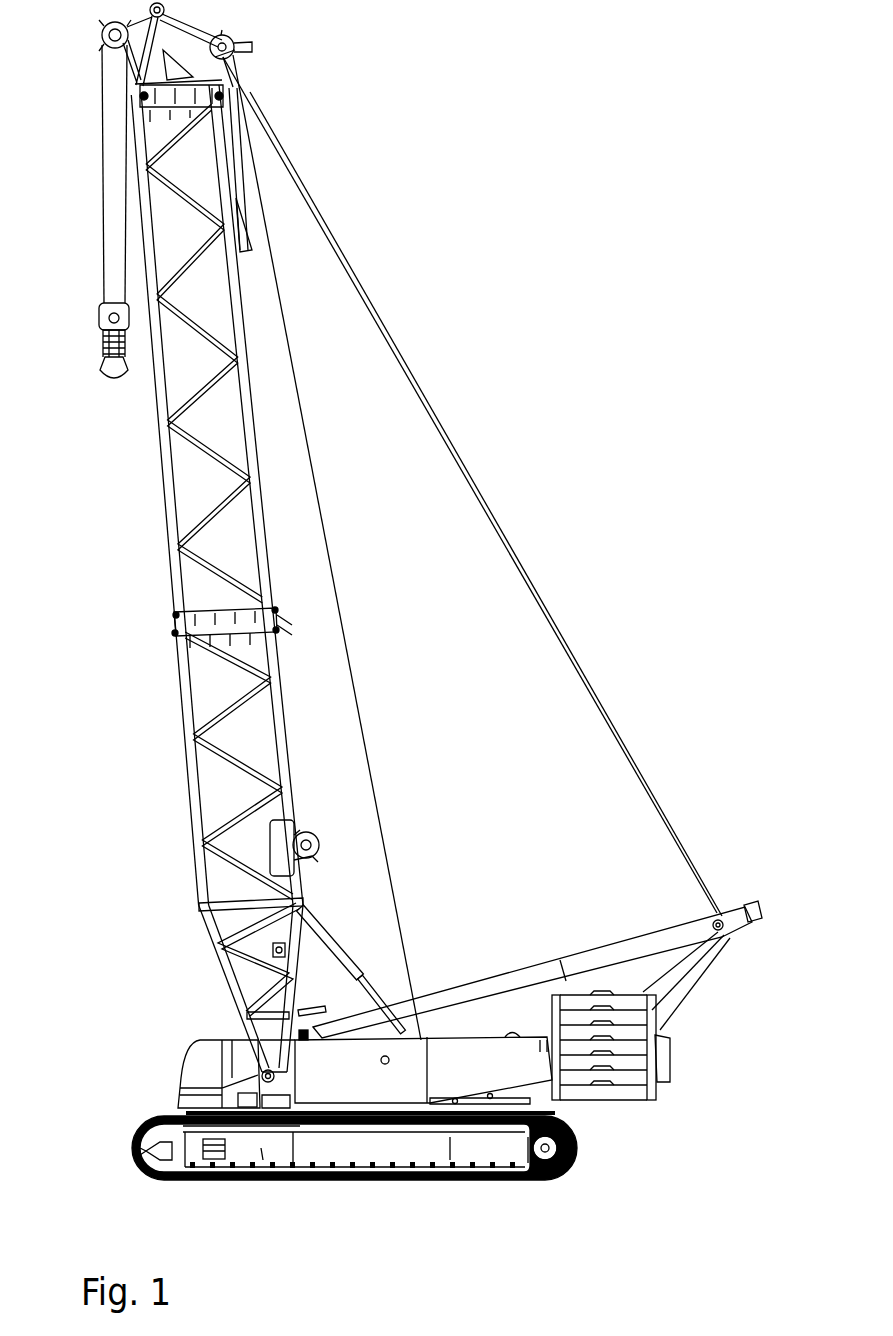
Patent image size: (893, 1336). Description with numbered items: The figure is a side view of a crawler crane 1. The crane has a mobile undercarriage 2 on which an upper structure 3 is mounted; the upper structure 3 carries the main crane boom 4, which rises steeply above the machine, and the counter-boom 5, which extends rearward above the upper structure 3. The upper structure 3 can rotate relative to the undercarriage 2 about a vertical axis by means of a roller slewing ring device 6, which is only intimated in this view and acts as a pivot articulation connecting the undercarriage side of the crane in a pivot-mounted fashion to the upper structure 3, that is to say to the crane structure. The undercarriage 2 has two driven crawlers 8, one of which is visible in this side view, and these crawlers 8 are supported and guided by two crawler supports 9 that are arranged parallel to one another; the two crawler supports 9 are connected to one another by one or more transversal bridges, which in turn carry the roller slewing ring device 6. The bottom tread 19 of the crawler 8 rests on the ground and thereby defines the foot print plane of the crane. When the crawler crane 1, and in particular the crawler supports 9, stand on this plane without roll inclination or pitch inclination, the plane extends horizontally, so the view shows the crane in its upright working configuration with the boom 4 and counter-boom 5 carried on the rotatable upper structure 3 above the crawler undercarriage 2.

The crawler crane 1 is at (469, 197).
The mobile undercarriage 2 is at (222, 1190).
The upper structure 3 is at (364, 1092).
The main crane boom 4 is at (168, 696).
The counter-boom 5 is at (530, 975).
The roller slewing ring device 6 is at (338, 1180).
The driven crawler 8 is at (550, 1180).
The crawler support 9 is at (448, 1180).
The bottom tread 19 is at (278, 1180).